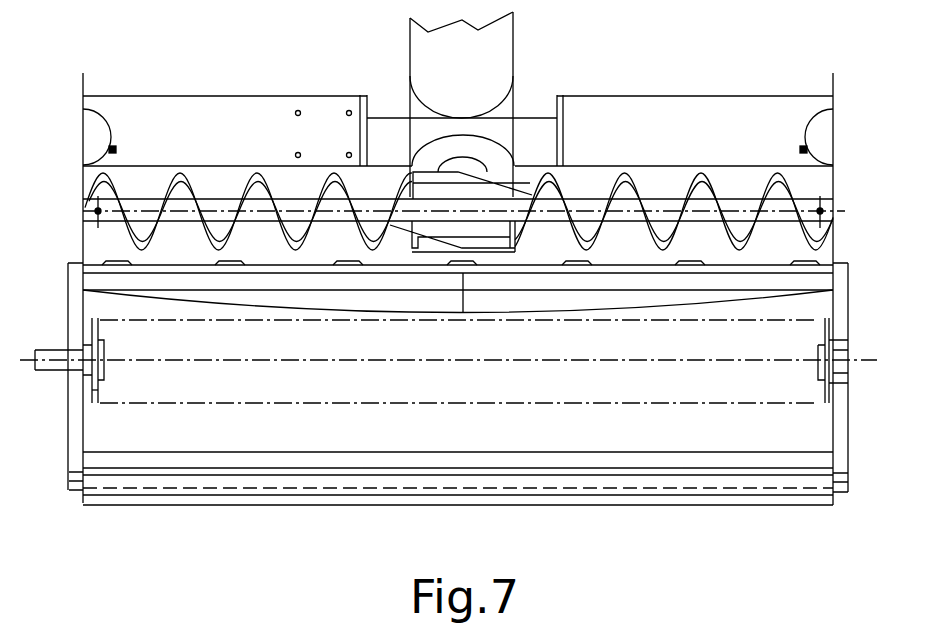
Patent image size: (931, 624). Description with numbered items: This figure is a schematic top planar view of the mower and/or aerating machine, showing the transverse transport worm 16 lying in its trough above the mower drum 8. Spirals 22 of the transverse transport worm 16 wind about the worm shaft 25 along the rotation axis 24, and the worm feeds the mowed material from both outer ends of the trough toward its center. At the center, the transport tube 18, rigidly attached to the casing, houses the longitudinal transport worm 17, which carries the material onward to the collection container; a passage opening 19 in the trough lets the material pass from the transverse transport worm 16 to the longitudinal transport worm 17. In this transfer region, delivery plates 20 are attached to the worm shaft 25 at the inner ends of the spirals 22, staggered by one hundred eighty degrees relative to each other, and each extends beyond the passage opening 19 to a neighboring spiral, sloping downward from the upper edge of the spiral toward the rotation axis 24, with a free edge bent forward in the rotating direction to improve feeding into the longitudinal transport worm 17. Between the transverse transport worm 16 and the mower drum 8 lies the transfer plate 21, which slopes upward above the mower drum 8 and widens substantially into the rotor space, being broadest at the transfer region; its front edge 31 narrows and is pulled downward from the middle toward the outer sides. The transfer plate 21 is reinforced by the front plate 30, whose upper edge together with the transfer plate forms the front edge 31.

The mower drum 8 is at (398, 374).
The transverse transport worm 16 is at (731, 190).
The longitudinal transport worm 17 is at (480, 88).
The transport tube 18 is at (503, 43).
The passage opening 19 is at (424, 250).
The delivery plates 20 is at (412, 196).
The transfer plate 21 is at (543, 295).
The spirals 22 is at (620, 172).
The rotation axis 24 is at (728, 214).
The worm shaft 25 is at (636, 222).
The front plate 30 is at (347, 265).
The front edge 31 is at (262, 300).